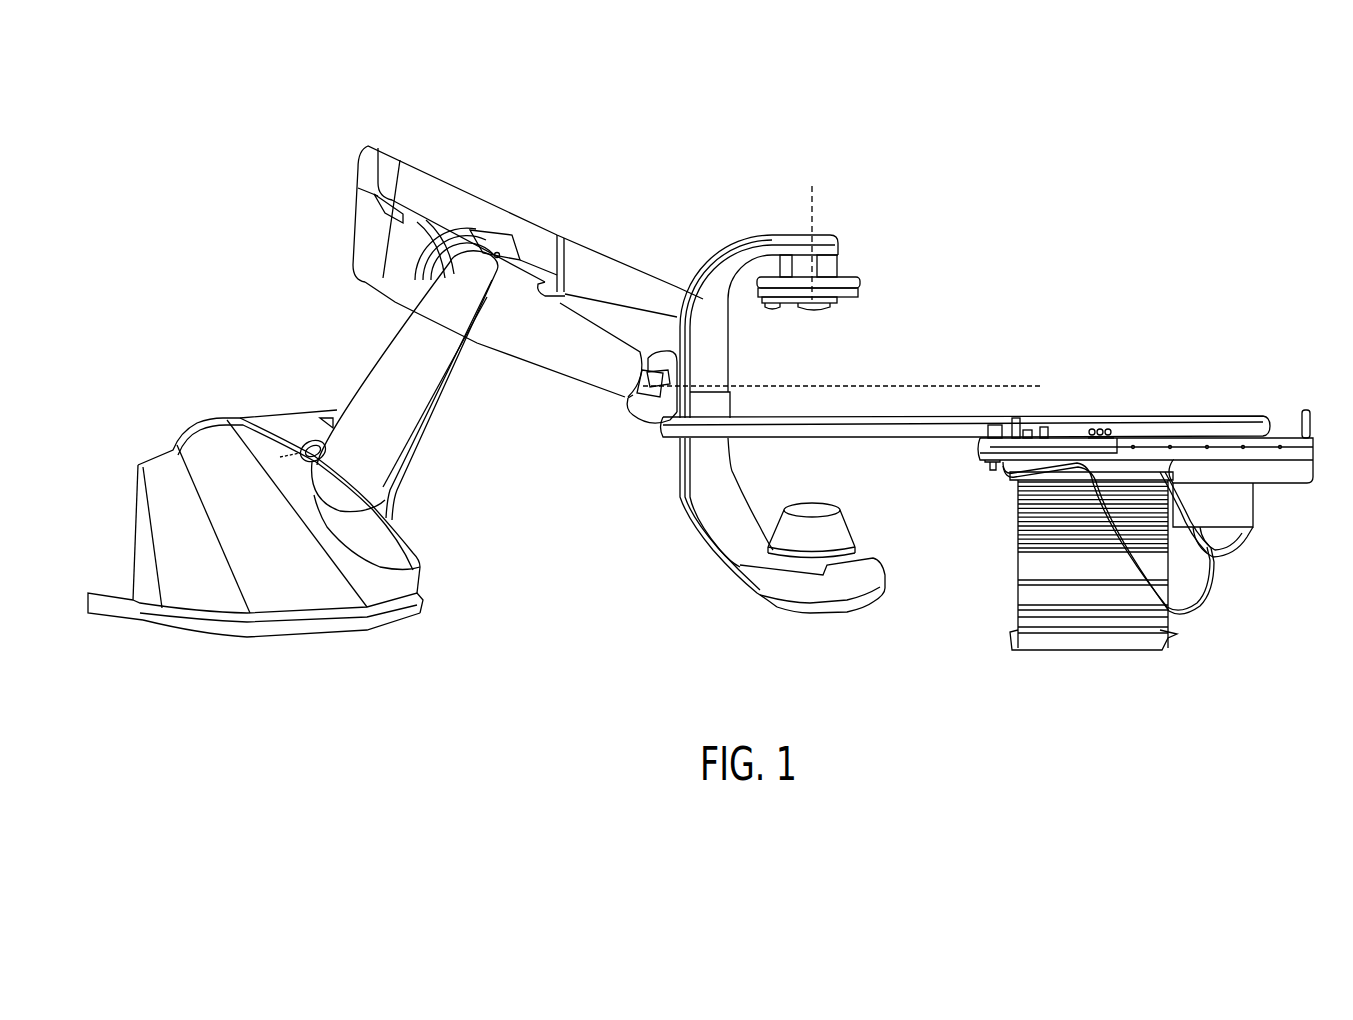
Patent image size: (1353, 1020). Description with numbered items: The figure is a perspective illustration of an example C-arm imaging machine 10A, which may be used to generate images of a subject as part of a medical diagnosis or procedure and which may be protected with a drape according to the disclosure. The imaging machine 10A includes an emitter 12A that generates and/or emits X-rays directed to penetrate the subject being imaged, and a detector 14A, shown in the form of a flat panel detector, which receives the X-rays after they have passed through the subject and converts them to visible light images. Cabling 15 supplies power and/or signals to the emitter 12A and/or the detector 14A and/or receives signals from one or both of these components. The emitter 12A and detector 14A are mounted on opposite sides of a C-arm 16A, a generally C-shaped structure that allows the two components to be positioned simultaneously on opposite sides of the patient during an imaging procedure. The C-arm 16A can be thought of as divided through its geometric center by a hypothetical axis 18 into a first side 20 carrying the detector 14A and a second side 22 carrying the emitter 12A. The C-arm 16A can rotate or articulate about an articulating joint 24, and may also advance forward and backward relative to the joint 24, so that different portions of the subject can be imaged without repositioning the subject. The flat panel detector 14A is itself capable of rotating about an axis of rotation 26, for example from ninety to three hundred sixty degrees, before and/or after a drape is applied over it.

The C-arm imaging machine 10A is at (1124, 167).
The emitter 12A is at (876, 534).
The detector 14A is at (872, 286).
The cabling 15 is at (577, 263).
The C-arm 16A is at (776, 363).
The hypothetical axis 18 is at (1020, 386).
The first side 20 is at (657, 317).
The second side 22 is at (646, 537).
The articulating joint 24 is at (657, 427).
The axis of rotation 26 is at (820, 196).